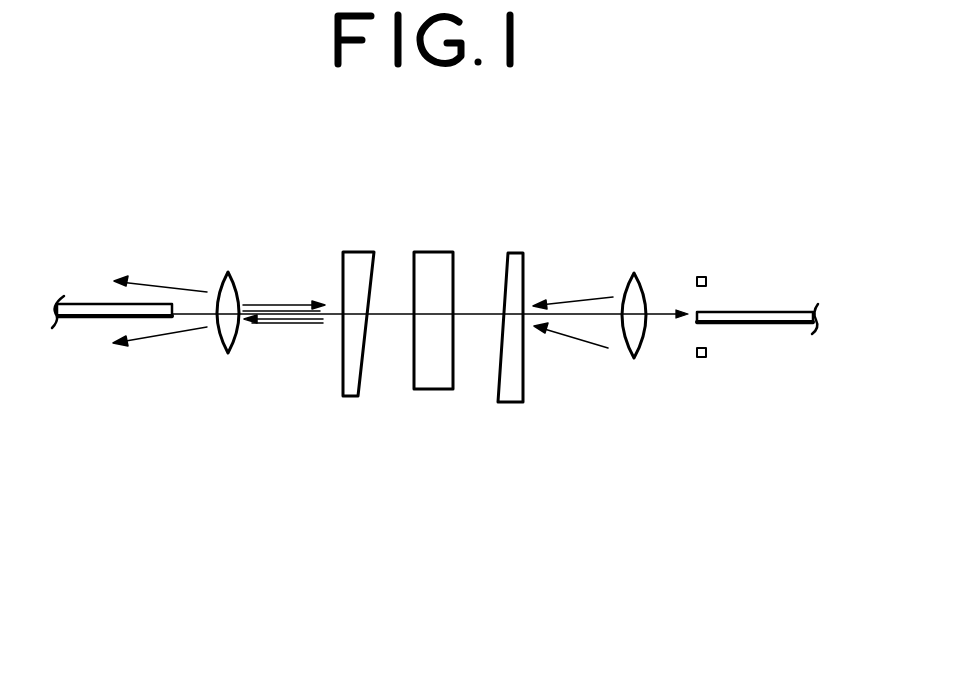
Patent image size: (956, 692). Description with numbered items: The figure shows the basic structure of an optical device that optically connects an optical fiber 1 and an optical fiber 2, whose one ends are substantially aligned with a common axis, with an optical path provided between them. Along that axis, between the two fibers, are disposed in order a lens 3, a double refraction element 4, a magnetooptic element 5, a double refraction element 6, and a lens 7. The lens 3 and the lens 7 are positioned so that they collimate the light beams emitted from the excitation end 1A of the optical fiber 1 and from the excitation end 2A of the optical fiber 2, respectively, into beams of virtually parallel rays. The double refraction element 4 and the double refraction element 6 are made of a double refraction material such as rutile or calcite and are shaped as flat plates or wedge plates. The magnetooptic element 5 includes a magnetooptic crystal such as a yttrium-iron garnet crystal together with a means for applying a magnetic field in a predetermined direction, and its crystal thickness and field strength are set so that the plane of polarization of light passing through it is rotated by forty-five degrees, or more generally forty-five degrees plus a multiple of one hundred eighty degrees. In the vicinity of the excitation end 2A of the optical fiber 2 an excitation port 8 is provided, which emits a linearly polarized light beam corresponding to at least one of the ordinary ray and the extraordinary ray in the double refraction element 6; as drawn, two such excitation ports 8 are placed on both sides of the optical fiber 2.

The optical fiber 1 is at (77, 304).
The excitation end 1A is at (175, 318).
The optical fiber 2 is at (753, 312).
The excitation end 2A is at (694, 312).
The lens 3 is at (232, 356).
The double refraction element 4 is at (359, 398).
The magnetooptic element 5 is at (438, 390).
The double refraction element 6 is at (513, 404).
The lens 7 is at (636, 360).
The excitation port 8 is at (702, 275).